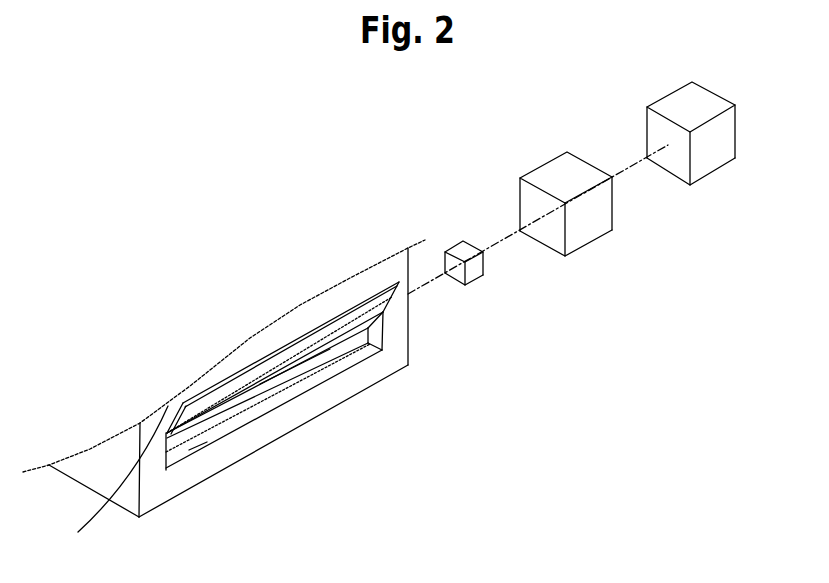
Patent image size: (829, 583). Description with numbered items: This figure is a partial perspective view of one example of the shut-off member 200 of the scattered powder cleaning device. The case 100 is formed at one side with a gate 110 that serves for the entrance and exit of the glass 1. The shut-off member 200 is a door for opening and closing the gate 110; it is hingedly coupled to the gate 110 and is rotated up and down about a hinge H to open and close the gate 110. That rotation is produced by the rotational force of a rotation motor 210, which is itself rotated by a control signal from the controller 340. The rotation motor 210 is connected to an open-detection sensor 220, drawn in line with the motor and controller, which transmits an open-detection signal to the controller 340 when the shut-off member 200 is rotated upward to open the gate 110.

The glass 1 is at (295, 373).
The case 100 is at (257, 347).
The gate 110 is at (203, 445).
The shut-off member 200 is at (333, 317).
The rotation motor 210 is at (591, 231).
The open-detection sensor 220 is at (480, 281).
The controller 340 is at (715, 160).
The hinge H is at (112, 479).